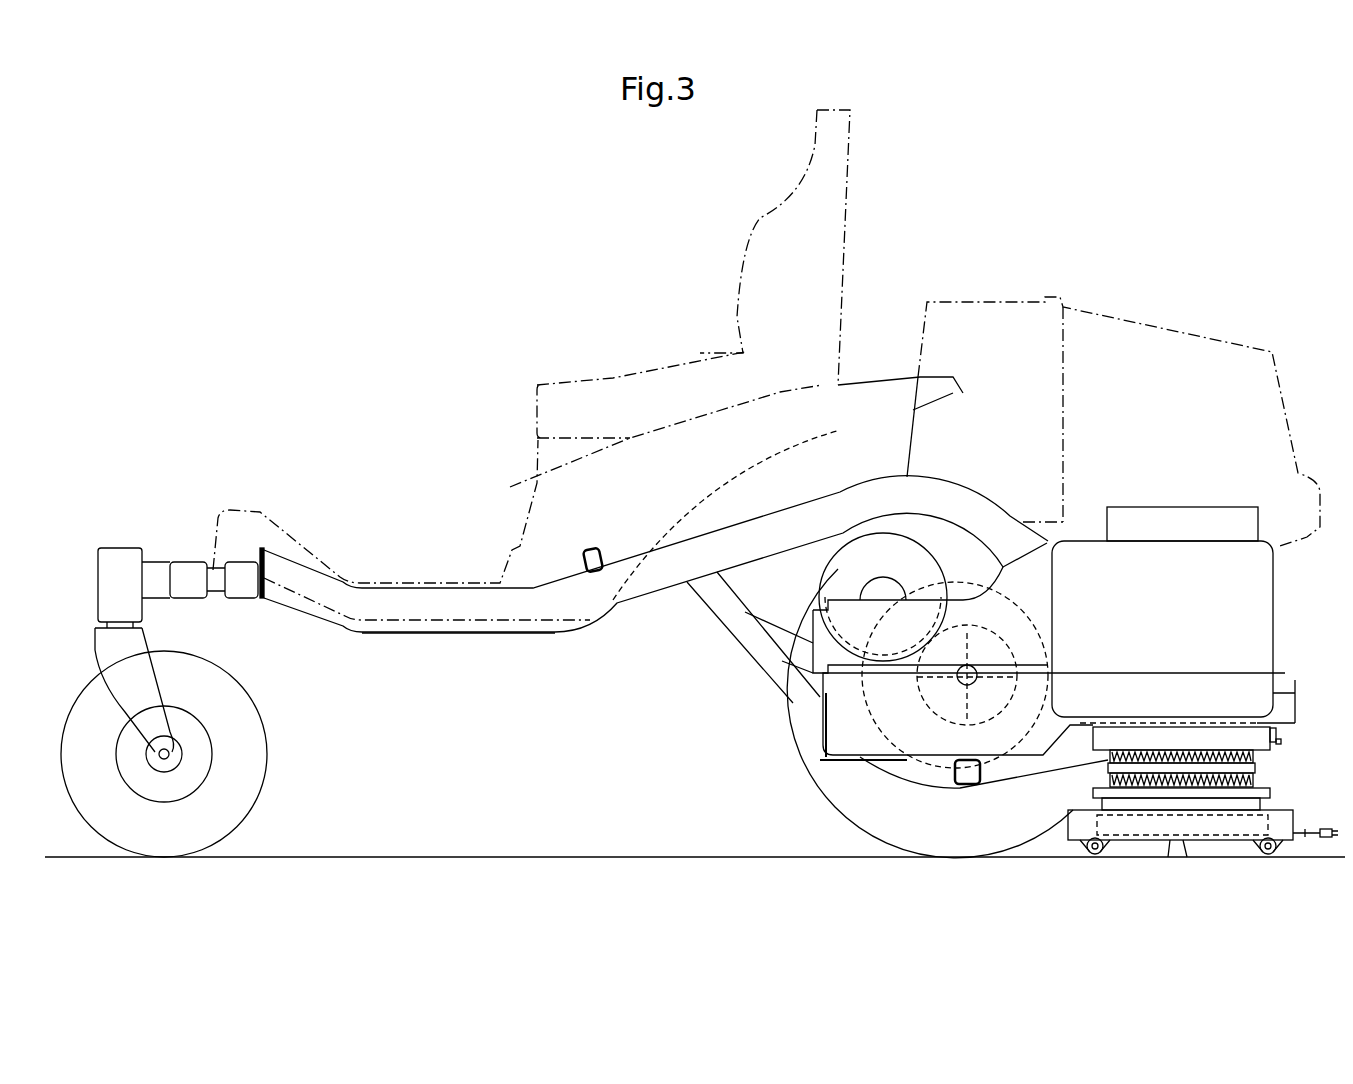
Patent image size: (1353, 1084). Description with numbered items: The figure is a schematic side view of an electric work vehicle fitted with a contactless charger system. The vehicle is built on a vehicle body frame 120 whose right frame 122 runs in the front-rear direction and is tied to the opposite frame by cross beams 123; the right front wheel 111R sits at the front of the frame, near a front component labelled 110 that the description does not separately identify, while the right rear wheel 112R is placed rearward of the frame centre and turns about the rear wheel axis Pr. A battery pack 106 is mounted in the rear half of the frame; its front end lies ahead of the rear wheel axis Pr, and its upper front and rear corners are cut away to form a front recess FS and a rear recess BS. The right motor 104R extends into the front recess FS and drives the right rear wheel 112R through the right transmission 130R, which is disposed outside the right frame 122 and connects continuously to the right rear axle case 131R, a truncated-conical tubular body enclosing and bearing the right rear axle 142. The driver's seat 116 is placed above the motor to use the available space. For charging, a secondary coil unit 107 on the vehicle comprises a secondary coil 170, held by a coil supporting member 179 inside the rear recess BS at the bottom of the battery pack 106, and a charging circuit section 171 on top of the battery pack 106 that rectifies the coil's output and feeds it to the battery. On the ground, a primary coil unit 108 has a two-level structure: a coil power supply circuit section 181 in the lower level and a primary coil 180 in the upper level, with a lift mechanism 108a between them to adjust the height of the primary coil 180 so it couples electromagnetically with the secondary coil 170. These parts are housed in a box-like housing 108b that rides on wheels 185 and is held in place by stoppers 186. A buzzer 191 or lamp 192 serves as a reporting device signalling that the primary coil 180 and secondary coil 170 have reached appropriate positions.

The front wheel support (caster fork) 110 is at (232, 504).
The right front wheel 111R is at (262, 772).
The vehicle body frame 120 is at (470, 640).
The right frame 122 is at (370, 633).
The cross beam 123 is at (593, 549).
The driver's seat 116 is at (755, 228).
The right motor 104R is at (853, 562).
The right rear wheel 112R is at (805, 748).
The right transmission 130R is at (953, 578).
The right rear axle case 131R is at (1000, 643).
The right rear axle 142 is at (913, 718).
The front recess FS is at (813, 645).
The rear wheel axis Pr is at (1028, 699).
The battery pack 106 is at (1277, 603).
The charging circuit section 171 is at (1185, 507).
The coil supporting member 179 is at (1237, 722).
The rear recess BS is at (1142, 740).
The buzzer 191 is at (1277, 735).
The lamp 192 is at (1281, 741).
The secondary coil 170 is at (1253, 757).
The secondary coil unit 107 is at (1256, 769).
The primary coil 180 is at (1110, 777).
The lift mechanism 108a is at (1093, 800).
The housing 108b is at (1072, 834).
The primary coil unit 108 is at (1173, 850).
The coil power supply circuit section 181 is at (1187, 842).
The wheels 185 is at (1095, 856).
The stoppers 186 is at (1083, 849).